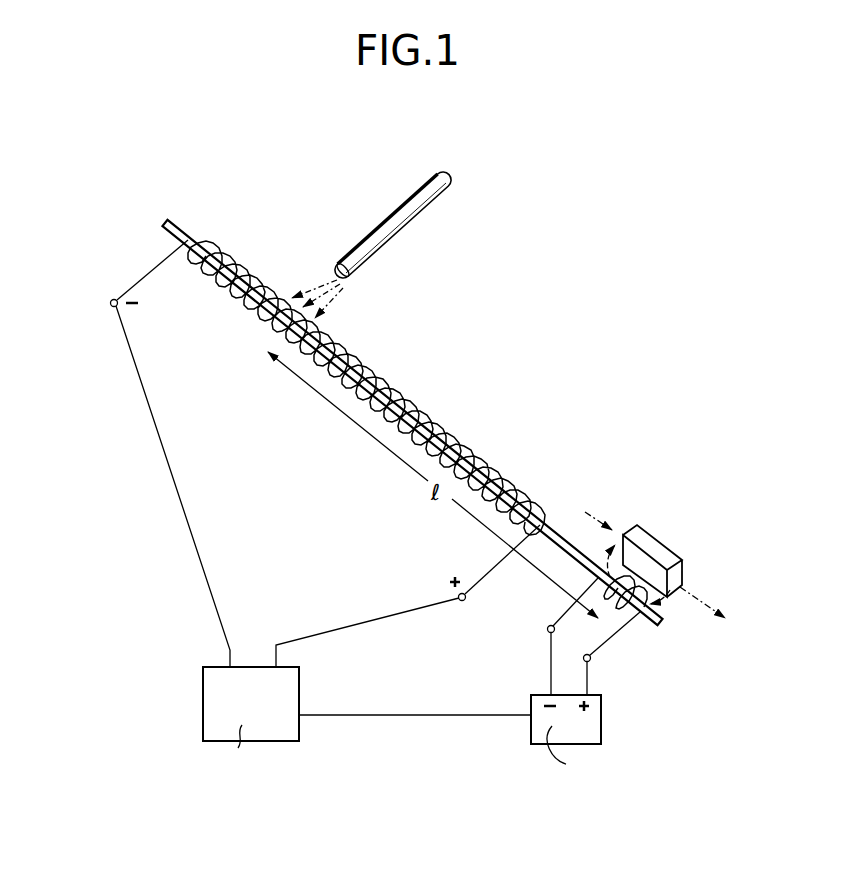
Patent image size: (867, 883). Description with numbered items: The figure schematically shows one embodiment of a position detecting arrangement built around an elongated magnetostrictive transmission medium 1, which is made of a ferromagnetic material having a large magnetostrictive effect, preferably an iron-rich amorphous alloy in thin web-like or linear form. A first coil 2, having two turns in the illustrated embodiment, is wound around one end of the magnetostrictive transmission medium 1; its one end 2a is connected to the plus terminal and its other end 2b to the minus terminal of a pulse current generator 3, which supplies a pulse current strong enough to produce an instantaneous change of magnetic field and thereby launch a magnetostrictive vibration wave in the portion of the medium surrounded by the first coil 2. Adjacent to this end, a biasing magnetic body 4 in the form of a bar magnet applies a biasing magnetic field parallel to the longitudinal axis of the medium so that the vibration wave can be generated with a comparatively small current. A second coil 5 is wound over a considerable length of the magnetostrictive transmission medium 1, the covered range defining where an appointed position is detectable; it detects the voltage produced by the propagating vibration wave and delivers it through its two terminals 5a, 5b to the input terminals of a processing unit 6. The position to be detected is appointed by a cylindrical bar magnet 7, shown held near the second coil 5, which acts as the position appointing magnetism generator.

The magnetostrictive transmission medium 1 is at (173, 225).
The first coil 2 is at (641, 615).
The one end of the first coil 2a is at (590, 661).
The other end of the first coil 2b is at (548, 632).
The pulse current generator 3 is at (601, 728).
The biasing magnetic body 4 is at (670, 545).
The second coil 5 is at (437, 425).
The terminal of the second coil 5a is at (465, 600).
The terminal of the second coil 5b is at (110, 303).
The processing unit 6 is at (300, 693).
The bar magnet 7 is at (398, 210).